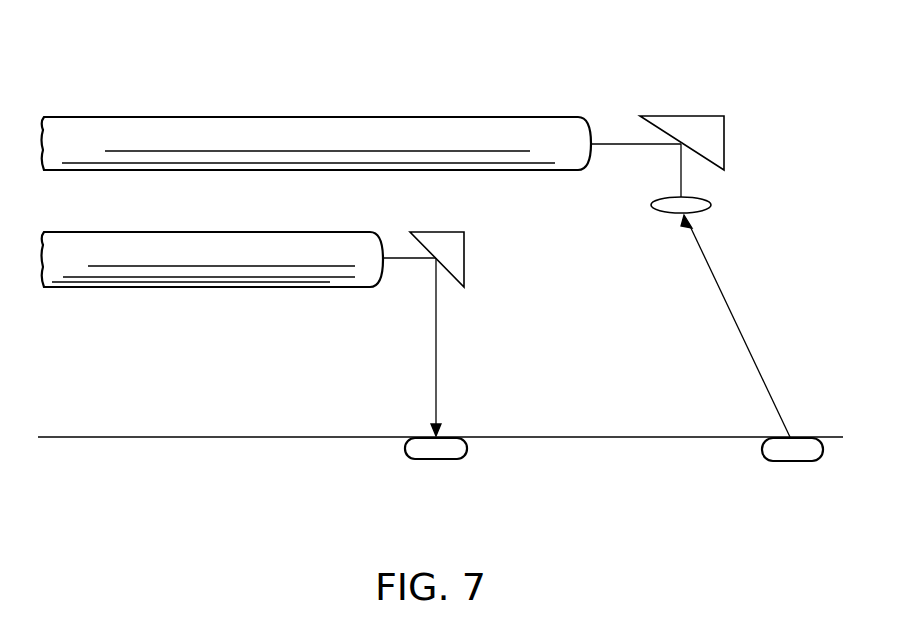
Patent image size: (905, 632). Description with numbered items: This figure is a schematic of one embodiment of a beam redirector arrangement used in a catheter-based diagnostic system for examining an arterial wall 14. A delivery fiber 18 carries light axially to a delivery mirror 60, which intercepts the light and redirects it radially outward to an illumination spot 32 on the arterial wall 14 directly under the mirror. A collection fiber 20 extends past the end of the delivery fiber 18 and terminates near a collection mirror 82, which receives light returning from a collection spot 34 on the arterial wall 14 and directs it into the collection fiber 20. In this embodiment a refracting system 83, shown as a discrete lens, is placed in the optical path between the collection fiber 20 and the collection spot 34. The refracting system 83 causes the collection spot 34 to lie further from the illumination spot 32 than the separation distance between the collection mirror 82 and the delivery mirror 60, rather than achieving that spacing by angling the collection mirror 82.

The arterial wall 14 is at (203, 436).
The delivery fiber 18 is at (140, 288).
The collection fiber 20 is at (212, 117).
The illumination spot 32 is at (432, 461).
The collection spot 34 is at (793, 463).
The delivery mirror 60 is at (455, 255).
The collection mirror 82 is at (713, 136).
The refracting system 83 is at (711, 207).